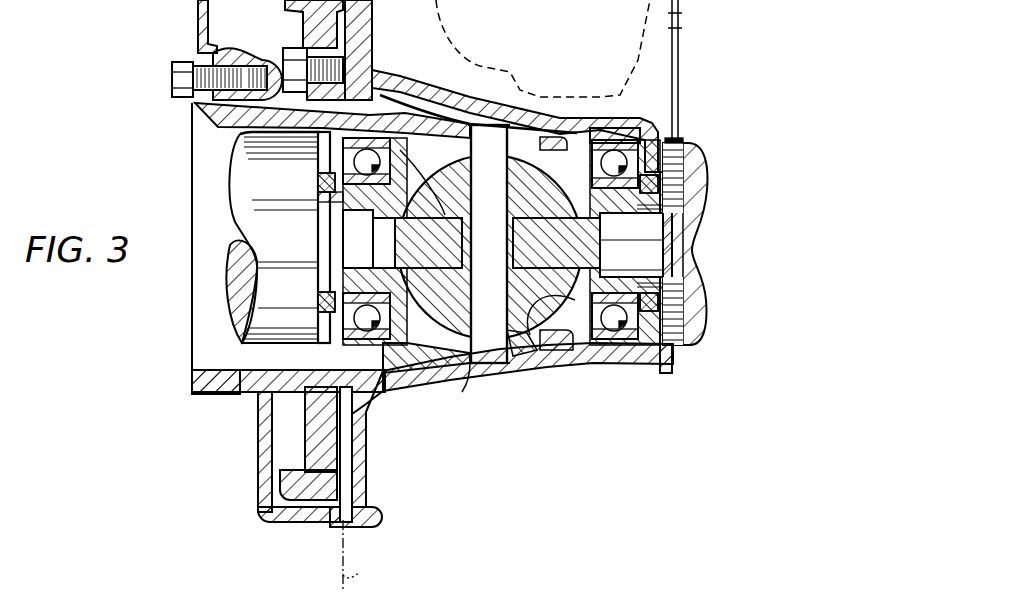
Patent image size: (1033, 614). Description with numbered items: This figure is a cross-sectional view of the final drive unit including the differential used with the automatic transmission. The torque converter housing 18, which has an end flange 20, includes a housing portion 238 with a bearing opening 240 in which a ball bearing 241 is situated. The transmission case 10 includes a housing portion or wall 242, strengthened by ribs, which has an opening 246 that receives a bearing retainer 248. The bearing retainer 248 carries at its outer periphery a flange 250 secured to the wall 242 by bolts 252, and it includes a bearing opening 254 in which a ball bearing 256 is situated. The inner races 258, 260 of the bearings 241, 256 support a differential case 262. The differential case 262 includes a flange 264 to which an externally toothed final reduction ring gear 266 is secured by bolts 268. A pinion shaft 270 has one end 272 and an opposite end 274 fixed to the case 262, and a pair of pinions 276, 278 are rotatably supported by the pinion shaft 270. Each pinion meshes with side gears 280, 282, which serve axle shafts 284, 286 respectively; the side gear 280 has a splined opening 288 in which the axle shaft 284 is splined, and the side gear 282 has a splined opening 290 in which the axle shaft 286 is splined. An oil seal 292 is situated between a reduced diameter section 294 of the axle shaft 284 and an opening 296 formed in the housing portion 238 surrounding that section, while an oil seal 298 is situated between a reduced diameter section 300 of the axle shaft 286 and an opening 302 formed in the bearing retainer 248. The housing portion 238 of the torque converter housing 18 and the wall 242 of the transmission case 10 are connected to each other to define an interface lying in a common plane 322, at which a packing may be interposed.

The transmission case 10 is at (197, 24).
The housing 18 is at (537, 387).
The end flange 20 is at (355, 520).
The housing portion 238 is at (440, 378).
The bearing opening 240 is at (630, 128).
The ball bearing 241 is at (613, 158).
The wall 242 is at (245, 58).
The opening 246 is at (210, 366).
The bearing retainer 248 is at (218, 114).
The flange 250 is at (200, 378).
The bolts 252 is at (172, 78).
The bearing opening 254 is at (413, 372).
The ball bearing 256 is at (372, 300).
The inner race 258 is at (680, 213).
The inner race 260 is at (372, 238).
The differential case 262 is at (455, 394).
The flange 264 is at (330, 420).
The final reduction ring gear 266 is at (300, 450).
The bolts 268 is at (285, 60).
The pinion shaft 270 is at (600, 237).
The end 272 is at (490, 133).
The end 274 is at (488, 340).
The pinion 276 is at (457, 147).
The pinion 278 is at (520, 357).
The side gear 280 is at (573, 350).
The side gear 282 is at (423, 175).
The axle shaft 284 is at (677, 157).
The axle shaft 286 is at (237, 190).
The splined opening 288 is at (577, 173).
The splined opening 290 is at (413, 167).
The oil seal 292 is at (678, 190).
The reduced diameter section 294 is at (653, 273).
The opening 296 is at (660, 300).
The oil seal 298 is at (318, 303).
The reduced diameter section 300 is at (318, 207).
The opening 302 is at (318, 182).
The plane 322 is at (370, 555).